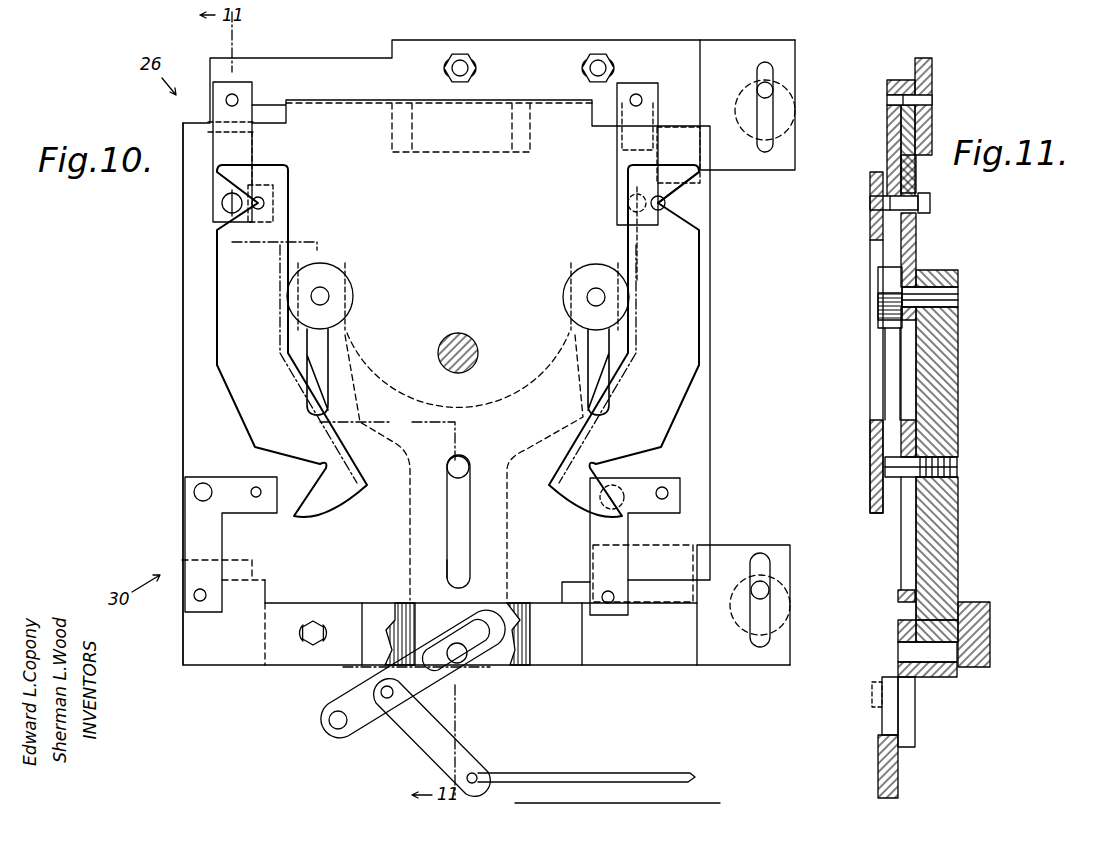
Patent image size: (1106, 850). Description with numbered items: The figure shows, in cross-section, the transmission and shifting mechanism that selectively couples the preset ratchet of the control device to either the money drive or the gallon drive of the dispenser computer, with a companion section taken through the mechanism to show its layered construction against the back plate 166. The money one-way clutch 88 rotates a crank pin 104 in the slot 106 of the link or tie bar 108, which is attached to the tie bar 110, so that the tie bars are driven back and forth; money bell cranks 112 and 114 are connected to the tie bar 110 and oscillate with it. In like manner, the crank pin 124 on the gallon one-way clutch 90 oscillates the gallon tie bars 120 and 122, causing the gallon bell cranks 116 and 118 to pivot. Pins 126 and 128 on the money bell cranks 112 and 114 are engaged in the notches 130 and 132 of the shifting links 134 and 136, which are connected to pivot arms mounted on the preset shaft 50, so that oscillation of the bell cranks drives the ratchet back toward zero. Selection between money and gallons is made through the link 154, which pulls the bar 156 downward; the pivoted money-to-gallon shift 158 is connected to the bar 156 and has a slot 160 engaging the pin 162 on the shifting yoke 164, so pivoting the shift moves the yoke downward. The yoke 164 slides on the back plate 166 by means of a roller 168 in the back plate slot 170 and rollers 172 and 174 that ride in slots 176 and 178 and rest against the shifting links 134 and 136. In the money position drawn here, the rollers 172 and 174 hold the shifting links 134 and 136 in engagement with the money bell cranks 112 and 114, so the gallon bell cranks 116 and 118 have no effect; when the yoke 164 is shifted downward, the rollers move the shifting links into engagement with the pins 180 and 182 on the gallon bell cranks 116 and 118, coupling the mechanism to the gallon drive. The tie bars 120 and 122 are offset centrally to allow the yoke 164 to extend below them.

In FIG. 10, the preset shaft 50 is at (470, 340).
In FIG. 10, the money one-way clutch 88 is at (795, 120).
In FIG. 10, the gallon one-way clutch 90 is at (780, 630).
In FIG. 10, the crank pin 104 is at (773, 90).
In FIG. 10, the slot 106 is at (773, 146).
In FIG. 10, the link or tie bar 108 is at (746, 40).
In FIG. 10, the tie bar 110 is at (310, 58).
In FIG. 11, the tie bar 110 is at (934, 68).
In FIG. 10, the money bell crank 112 is at (250, 152).
In FIG. 11, the money bell crank 112 is at (888, 150).
In FIG. 10, the money bell crank 114 is at (618, 160).
In FIG. 10, the gallon bell crank 116 is at (187, 539).
In FIG. 10, the gallon bell crank 118 is at (645, 510).
In FIG. 10, the gallon tie bar 120 is at (748, 667).
In FIG. 11, the gallon tie bar 120 is at (985, 667).
In FIG. 10, the gallon tie bar 122 is at (218, 667).
In FIG. 11, the gallon tie bar 122 is at (968, 672).
In FIG. 10, the crank pin 124 is at (770, 590).
In FIG. 10, the pin 126 is at (265, 203).
In FIG. 10, the pin 128 is at (665, 204).
In FIG. 10, the notch 130 is at (224, 194).
In FIG. 10, the notch 132 is at (702, 226).
In FIG. 10, the shifting link 134 is at (244, 424).
In FIG. 11, the shifting link 134 is at (878, 204).
In FIG. 10, the shifting link 136 is at (700, 403).
In FIG. 10, the link 154 is at (612, 775).
In FIG. 10, the bar 156 is at (420, 745).
In FIG. 11, the bar 156 is at (899, 766).
In FIG. 10, the money-to-gallon shift 158 is at (336, 700).
In FIG. 11, the money-to-gallon shift 158 is at (916, 728).
In FIG. 10, the slot 160 is at (512, 632).
In FIG. 10, the pin 162 is at (468, 662).
In FIG. 11, the pin 162 is at (888, 660).
In FIG. 10, the shifting yoke 164 is at (408, 553).
In FIG. 11, the shifting yoke 164 is at (958, 333).
In FIG. 10, the back plate 166 is at (183, 432).
In FIG. 11, the back plate 166 is at (918, 250).
In FIG. 10, the roller 168 is at (466, 470).
In FIG. 11, the roller 168 is at (888, 470).
In FIG. 10, the back plate slot 170 is at (447, 565).
In FIG. 11, the back plate slot 170 is at (908, 532).
In FIG. 10, the roller 172 is at (348, 278).
In FIG. 11, the roller 172 is at (888, 272).
In FIG. 10, the roller 174 is at (568, 285).
In FIG. 10, the slot 176 is at (330, 345).
In FIG. 11, the slot 176 is at (898, 405).
In FIG. 10, the slot 178 is at (588, 348).
In FIG. 10, the pin 180 is at (256, 498).
In FIG. 10, the pin 182 is at (668, 492).